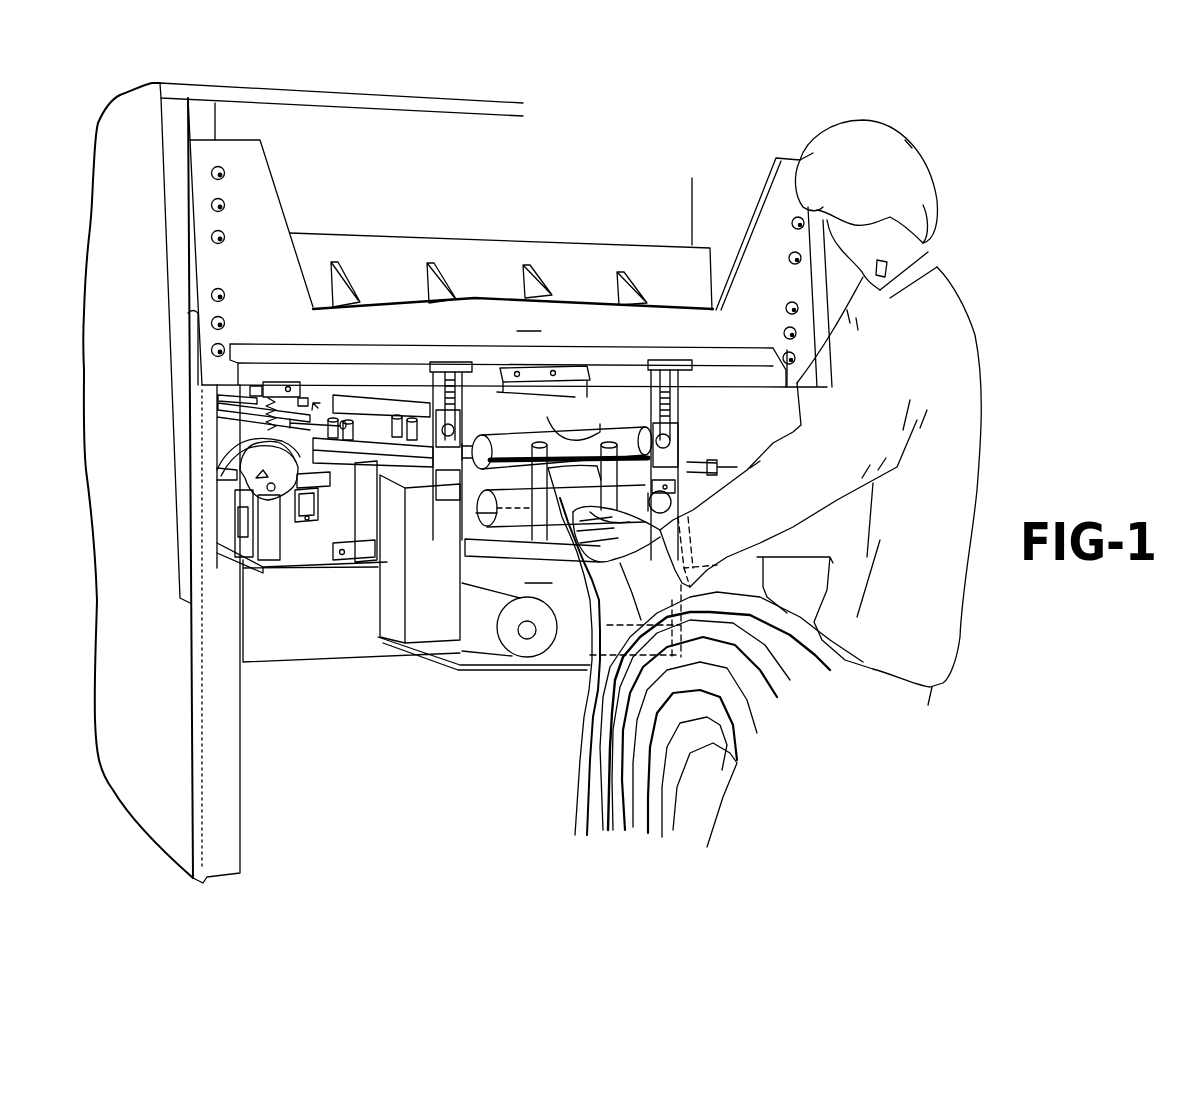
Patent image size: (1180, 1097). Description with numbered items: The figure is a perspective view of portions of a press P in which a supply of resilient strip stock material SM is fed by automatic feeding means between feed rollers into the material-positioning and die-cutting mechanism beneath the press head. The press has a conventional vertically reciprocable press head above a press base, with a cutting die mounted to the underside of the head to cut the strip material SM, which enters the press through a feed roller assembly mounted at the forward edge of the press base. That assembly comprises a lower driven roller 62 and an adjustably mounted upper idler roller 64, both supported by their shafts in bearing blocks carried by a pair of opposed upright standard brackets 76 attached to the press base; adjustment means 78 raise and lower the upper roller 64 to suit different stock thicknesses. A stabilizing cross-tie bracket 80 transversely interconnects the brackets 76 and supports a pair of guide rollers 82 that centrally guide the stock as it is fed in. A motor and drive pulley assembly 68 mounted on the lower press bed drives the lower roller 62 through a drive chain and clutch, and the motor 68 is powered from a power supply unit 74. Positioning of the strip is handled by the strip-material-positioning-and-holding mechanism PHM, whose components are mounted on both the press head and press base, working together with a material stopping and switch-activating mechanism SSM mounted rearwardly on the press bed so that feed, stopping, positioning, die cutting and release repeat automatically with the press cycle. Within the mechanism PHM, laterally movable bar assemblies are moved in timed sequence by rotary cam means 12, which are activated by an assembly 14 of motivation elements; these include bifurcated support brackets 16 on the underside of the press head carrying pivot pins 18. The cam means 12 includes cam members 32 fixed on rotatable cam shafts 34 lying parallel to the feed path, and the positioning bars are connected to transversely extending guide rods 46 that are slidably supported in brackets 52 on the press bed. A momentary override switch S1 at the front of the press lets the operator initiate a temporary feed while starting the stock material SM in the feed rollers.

The rotary cam means 12 is at (240, 483).
The assembly of motivation elements 14 is at (258, 386).
The support bracket 16 is at (284, 382).
The pivot pin 18 is at (304, 397).
The cam member 32 is at (250, 470).
The cam shaft 34 is at (267, 488).
The guide rod 46 is at (338, 492).
The bracket 52 is at (320, 557).
The lower driven roller 62 is at (500, 497).
The upper idler roller 64 is at (595, 440).
The motor and drive pulley assembly 68 is at (473, 603).
The power supply unit 74 is at (733, 580).
The upright standard bracket 76 is at (430, 410).
The adjustment means 78 is at (461, 356).
The stabilizing cross-tie bracket 80 is at (487, 556).
The guide roller 82 is at (580, 440).
The press P is at (513, 194).
The strip-material-positioning-and-holding mechanism PHM is at (289, 547).
The material stopping and switch-activating mechanism SSM is at (313, 403).
The momentary override switch S1 is at (580, 668).
The strip stock material SM is at (568, 734).